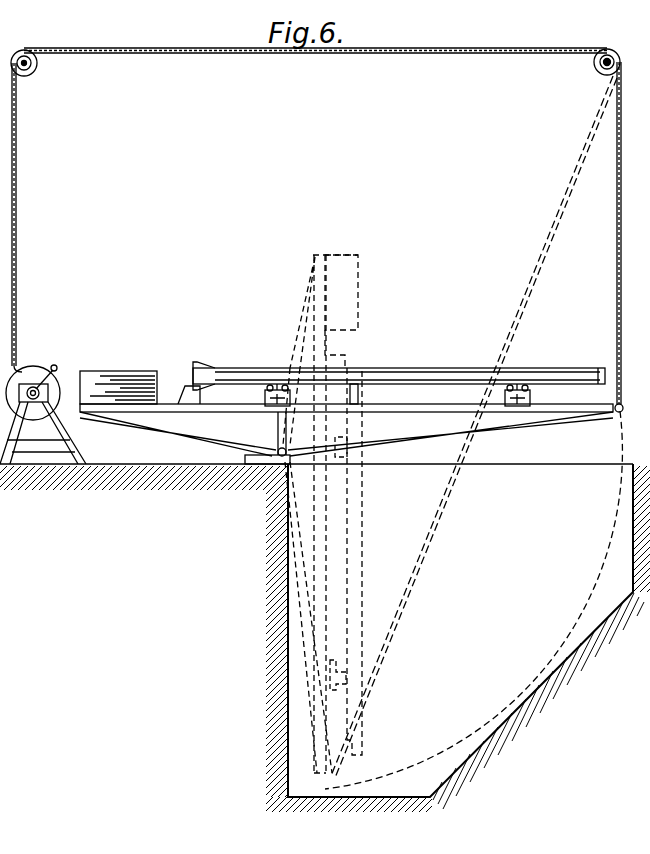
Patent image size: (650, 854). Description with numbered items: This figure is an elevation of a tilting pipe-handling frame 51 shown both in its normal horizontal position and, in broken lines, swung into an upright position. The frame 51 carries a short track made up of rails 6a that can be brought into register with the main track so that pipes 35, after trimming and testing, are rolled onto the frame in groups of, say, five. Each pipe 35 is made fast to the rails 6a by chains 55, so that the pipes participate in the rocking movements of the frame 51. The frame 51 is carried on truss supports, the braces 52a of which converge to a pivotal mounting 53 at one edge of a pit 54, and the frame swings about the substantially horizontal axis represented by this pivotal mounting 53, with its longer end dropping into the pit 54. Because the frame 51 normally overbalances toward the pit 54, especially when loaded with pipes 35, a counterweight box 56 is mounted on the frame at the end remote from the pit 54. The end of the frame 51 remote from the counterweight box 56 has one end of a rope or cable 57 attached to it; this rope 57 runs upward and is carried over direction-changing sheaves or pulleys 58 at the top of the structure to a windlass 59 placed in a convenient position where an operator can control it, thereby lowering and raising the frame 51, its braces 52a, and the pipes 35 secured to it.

The direction-changing sheave 58 is at (33, 75).
The rope or cable 57 is at (17, 250).
The windlass 59 is at (36, 378).
The counterweight box 56 is at (122, 372).
The pipe 35 is at (433, 370).
The frame 51 is at (388, 370).
The chain 55 is at (277, 386).
The rail 6a is at (266, 398).
The brace 52a is at (300, 320).
The pivotal mounting 53 is at (275, 468).
The pit 54 is at (325, 611).